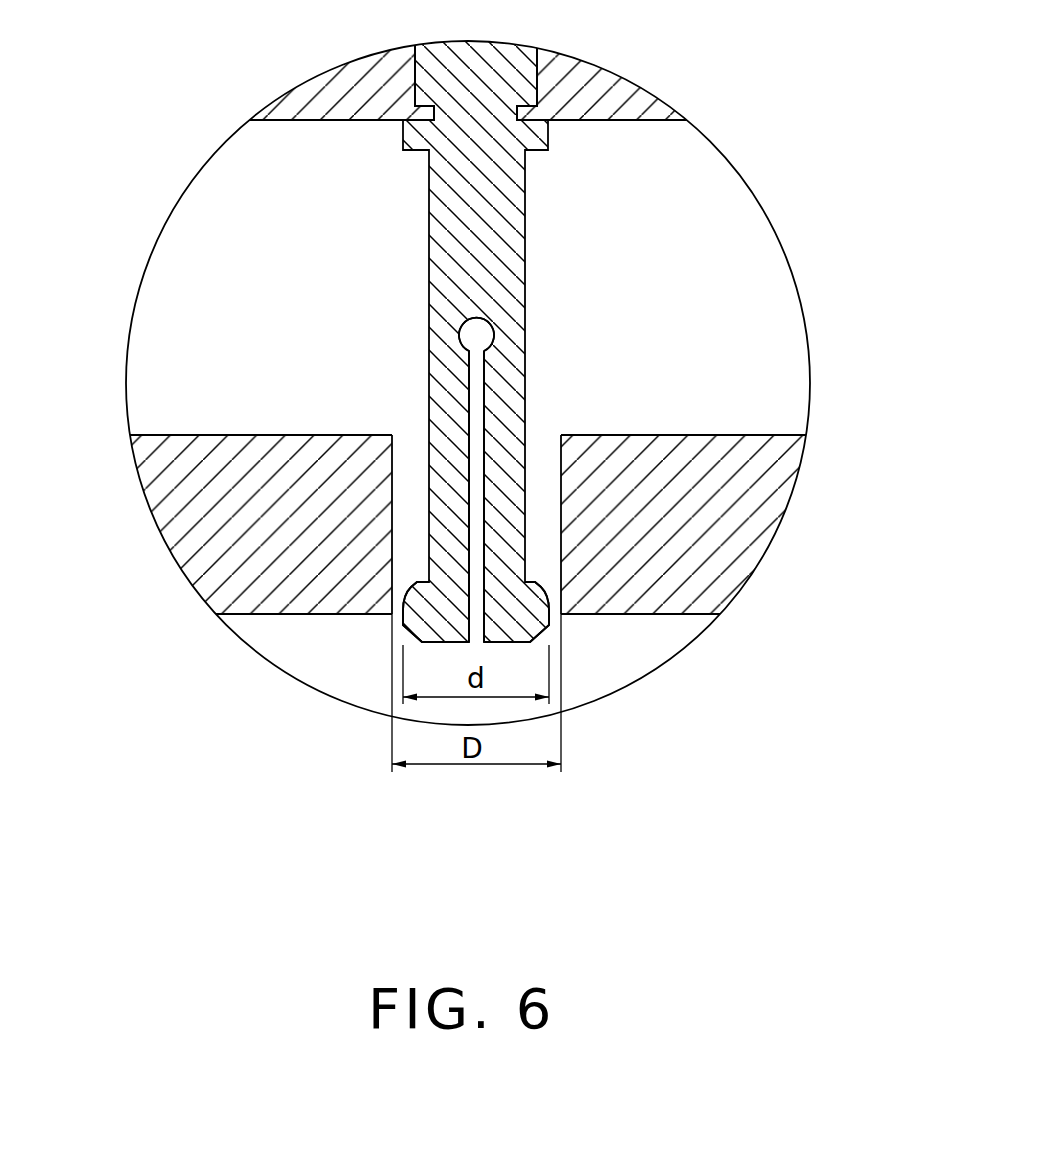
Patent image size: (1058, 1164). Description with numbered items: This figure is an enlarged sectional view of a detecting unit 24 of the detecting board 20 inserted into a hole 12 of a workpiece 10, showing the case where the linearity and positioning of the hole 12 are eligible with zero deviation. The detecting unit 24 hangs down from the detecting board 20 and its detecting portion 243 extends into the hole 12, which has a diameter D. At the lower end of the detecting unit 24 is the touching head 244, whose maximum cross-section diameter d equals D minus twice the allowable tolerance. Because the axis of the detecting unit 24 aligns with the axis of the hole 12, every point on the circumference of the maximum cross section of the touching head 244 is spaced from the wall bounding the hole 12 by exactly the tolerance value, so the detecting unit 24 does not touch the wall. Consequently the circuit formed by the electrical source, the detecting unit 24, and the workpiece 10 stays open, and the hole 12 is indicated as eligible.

The workpiece 10 is at (700, 597).
The hole 12 is at (407, 473).
The detecting board 20 is at (565, 88).
The detecting unit 24 is at (525, 262).
The detecting portion 243 is at (525, 365).
The touching head 244 is at (533, 602).